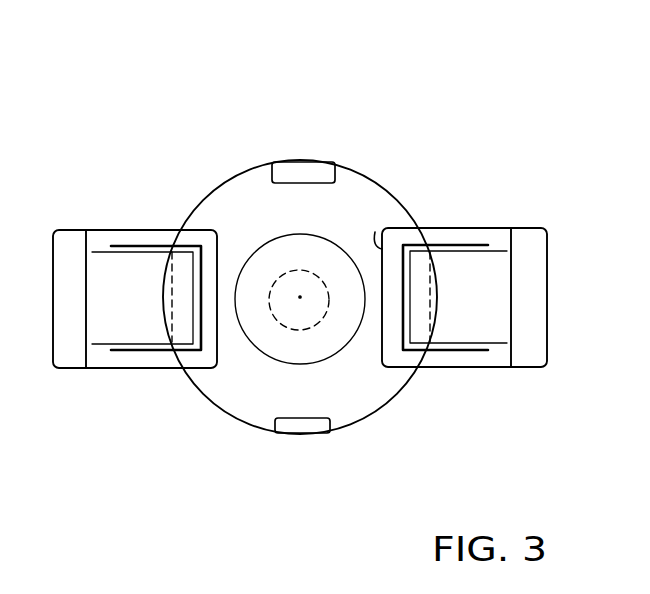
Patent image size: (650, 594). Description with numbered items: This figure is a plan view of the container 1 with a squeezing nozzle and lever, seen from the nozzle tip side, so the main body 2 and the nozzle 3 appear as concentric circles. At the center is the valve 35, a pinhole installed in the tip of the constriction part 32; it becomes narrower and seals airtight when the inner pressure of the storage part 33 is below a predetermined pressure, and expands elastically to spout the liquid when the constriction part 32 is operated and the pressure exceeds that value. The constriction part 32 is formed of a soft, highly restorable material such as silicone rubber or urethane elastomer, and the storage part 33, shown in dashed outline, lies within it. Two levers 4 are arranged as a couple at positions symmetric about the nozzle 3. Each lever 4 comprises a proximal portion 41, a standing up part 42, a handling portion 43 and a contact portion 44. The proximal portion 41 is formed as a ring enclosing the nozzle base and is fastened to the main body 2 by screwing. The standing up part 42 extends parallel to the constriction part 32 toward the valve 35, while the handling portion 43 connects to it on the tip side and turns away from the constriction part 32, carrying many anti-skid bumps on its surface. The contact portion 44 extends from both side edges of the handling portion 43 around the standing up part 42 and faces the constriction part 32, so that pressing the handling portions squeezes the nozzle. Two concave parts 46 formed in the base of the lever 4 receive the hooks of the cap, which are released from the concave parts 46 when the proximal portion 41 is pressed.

The container 1 is at (392, 89).
The main body 2 is at (382, 409).
The nozzle 3 is at (317, 368).
The lever 4 is at (70, 192).
The constriction part 32 is at (311, 243).
The storage part 33 is at (291, 324).
The valve 35 is at (300, 297).
The proximal portion 41 is at (363, 192).
The standing up part 42 is at (172, 318).
The handling portion 43 is at (535, 331).
The contact portion 44 is at (218, 250).
The concave part 46 is at (293, 172).